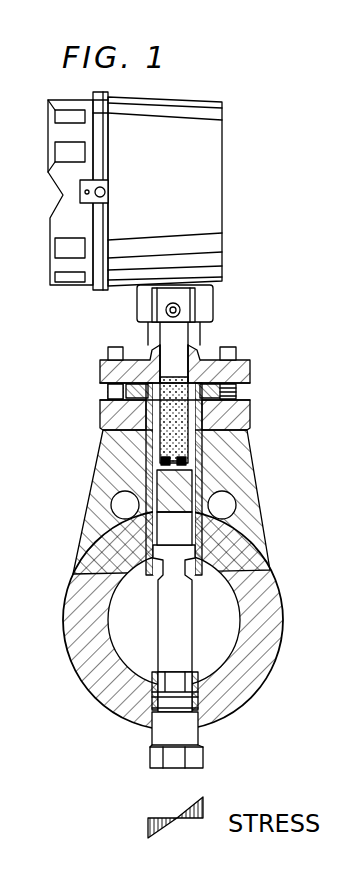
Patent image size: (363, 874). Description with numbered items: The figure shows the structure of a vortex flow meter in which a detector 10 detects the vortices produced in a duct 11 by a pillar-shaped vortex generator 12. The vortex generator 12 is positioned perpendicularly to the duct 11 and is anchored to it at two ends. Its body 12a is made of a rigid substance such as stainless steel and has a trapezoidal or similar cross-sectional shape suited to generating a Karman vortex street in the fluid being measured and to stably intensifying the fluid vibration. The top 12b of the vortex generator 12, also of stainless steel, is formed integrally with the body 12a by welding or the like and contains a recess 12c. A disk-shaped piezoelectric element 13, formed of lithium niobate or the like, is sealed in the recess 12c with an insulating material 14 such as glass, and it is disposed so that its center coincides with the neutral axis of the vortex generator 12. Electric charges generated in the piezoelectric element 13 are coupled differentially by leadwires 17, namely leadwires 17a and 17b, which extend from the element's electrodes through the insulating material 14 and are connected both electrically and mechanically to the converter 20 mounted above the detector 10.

The detector 10 is at (266, 445).
The duct 11 is at (258, 664).
The vortex generator 12 is at (192, 606).
The body 12a is at (200, 598).
The top 12b is at (205, 484).
The recess 12c is at (110, 394).
The piezoelectric element 13 is at (172, 441).
The insulating material 14 is at (174, 420).
The leadwires 17 is at (231, 371).
The leadwire 17a is at (161, 352).
The leadwire 17b is at (186, 352).
The converter 20 is at (215, 231).